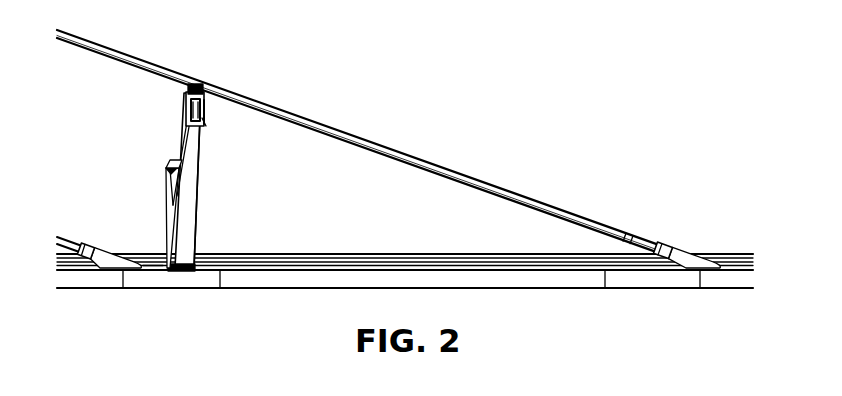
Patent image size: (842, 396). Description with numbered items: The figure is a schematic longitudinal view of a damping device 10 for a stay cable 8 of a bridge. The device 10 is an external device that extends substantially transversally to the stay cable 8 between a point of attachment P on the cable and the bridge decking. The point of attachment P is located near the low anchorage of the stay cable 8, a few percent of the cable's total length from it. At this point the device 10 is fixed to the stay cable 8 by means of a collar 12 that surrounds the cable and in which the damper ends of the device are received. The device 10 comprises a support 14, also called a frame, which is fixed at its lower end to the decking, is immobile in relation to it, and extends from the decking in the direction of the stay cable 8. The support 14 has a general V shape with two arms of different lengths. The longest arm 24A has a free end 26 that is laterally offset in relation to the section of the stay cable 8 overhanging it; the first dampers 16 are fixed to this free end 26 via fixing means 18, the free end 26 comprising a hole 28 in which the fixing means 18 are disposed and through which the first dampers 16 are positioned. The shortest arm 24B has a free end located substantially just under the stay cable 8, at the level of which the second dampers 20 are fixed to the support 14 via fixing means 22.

The stay cable 8 is at (484, 184).
The damping device 10 is at (267, 202).
The collar 12 is at (198, 91).
The support 14 is at (196, 239).
The first dampers 16 is at (192, 99).
The fixing means of the first dampers 18 is at (205, 112).
The second dampers 20 is at (176, 163).
The fixing means of the second dampers 22 is at (171, 164).
The arm 24A is at (198, 197).
The arm 24B is at (166, 201).
The free end 26 is at (216, 126).
The hole 28 is at (212, 118).
The point of attachment P is at (209, 106).